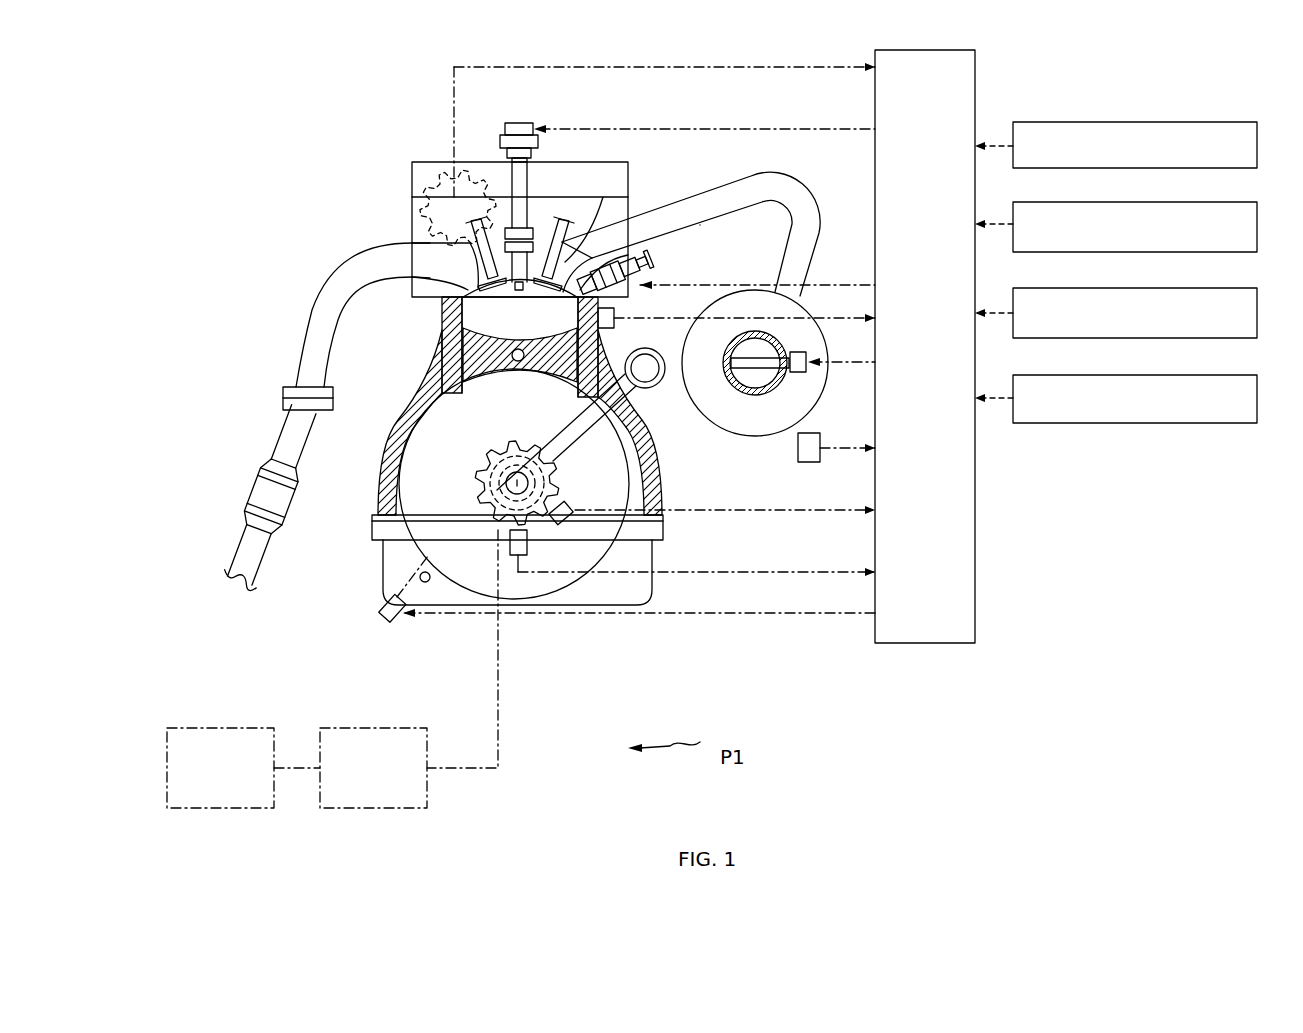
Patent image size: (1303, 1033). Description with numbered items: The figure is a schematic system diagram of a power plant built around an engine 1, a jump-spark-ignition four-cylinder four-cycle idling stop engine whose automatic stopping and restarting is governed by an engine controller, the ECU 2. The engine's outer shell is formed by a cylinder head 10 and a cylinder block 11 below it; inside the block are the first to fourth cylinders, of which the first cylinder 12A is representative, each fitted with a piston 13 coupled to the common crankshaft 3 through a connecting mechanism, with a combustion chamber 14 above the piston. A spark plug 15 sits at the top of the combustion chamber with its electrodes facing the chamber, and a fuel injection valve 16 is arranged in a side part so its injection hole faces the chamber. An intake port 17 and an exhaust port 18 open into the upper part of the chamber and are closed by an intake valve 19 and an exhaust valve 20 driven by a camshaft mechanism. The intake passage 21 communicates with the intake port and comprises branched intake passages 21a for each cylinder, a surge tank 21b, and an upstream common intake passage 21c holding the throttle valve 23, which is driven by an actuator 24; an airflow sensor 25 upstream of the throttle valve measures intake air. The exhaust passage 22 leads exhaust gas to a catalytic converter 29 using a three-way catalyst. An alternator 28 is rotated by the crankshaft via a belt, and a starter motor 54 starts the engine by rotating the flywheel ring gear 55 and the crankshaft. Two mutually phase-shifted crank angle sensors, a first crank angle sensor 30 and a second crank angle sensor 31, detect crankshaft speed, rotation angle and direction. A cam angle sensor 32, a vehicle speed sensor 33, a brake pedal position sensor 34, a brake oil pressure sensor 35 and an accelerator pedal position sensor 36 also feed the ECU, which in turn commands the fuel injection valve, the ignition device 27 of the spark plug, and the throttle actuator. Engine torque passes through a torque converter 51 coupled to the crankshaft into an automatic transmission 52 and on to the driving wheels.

The engine 1 is at (368, 172).
The engine controller (ECU) 2 is at (875, 478).
The crankshaft 3 is at (470, 485).
The cylinder head 10 is at (412, 288).
The cylinder block 11 is at (380, 470).
The first cylinder 12A is at (448, 313).
The piston 13 is at (540, 370).
The combustion chamber 14 is at (490, 376).
The spark plug 15 is at (523, 262).
The fuel injection valve 16 is at (650, 276).
The intake port 17 is at (608, 228).
The exhaust port 18 is at (440, 258).
The intake valve 19 is at (588, 255).
The exhaust valve 20 is at (498, 250).
The intake passage 21 is at (812, 178).
The branched intake passage 21a is at (763, 204).
The surge tank 21b is at (733, 436).
The common intake passage 21c is at (750, 378).
The exhaust passage 22 is at (318, 250).
The throttle valve 23 is at (742, 385).
The actuator 24 is at (806, 357).
The airflow sensor 25 is at (815, 433).
The ignition device 27 is at (525, 123).
The alternator 28 is at (655, 380).
The catalytic converter 29 is at (287, 513).
The first crank angle sensor 30 is at (515, 556).
The second crank angle sensor 31 is at (572, 505).
The cam angle sensor 32 is at (436, 165).
The vehicle speed sensor 33 is at (1240, 122).
The brake pedal position sensor 34 is at (1240, 202).
The brake oil pressure sensor 35 is at (1237, 288).
The accelerator pedal position sensor 36 is at (1240, 375).
The torque converter 51 is at (368, 728).
The automatic transmission 52 is at (207, 728).
The starter motor 54 is at (385, 616).
The flywheel ring gear 55 is at (593, 575).